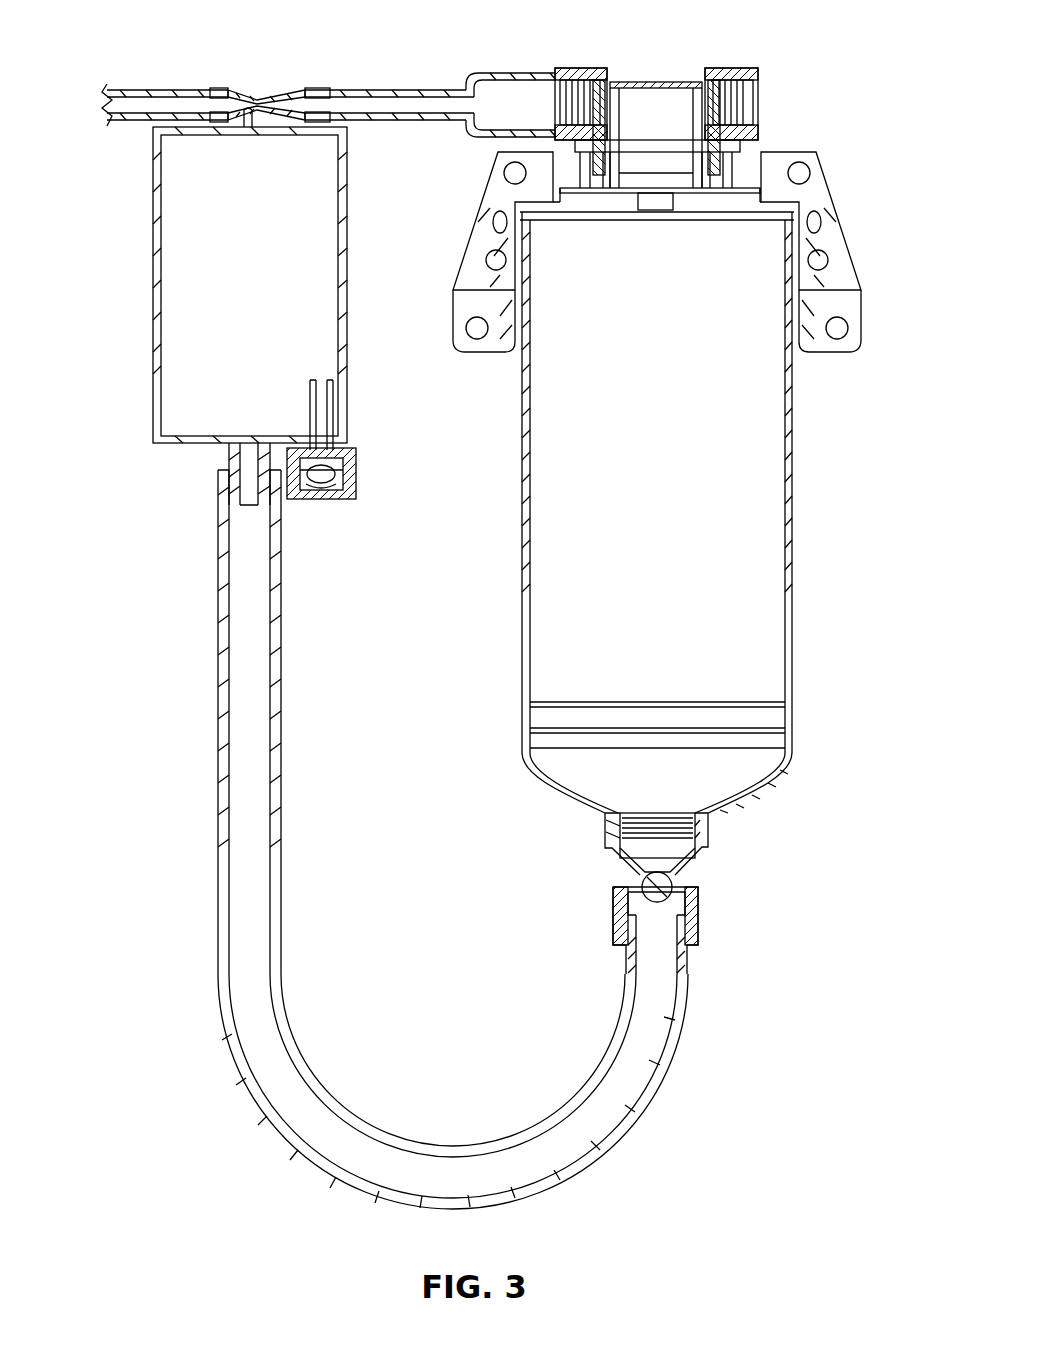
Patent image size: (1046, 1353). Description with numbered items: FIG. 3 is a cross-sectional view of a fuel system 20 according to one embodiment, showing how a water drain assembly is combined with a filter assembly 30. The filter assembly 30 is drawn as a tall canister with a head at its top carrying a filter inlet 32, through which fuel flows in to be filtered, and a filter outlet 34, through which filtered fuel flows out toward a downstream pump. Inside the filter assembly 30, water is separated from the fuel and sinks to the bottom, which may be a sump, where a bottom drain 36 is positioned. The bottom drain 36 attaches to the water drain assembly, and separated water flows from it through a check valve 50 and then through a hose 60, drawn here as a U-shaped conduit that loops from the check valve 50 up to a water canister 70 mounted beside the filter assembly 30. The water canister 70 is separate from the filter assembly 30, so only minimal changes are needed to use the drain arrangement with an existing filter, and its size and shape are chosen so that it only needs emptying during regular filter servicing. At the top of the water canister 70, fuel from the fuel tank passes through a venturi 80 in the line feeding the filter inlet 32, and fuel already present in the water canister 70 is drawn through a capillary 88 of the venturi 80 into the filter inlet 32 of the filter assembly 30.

The fuel system 20 is at (838, 62).
The filter assembly 30 is at (800, 500).
The filter inlet 32 is at (573, 68).
The filter outlet 34 is at (736, 68).
The bottom drain 36 is at (607, 835).
The check valve 50 is at (694, 873).
The hose 60 is at (147, 90).
The water canister 70 is at (155, 273).
The venturi 80 is at (275, 84).
The capillary 88 is at (256, 112).